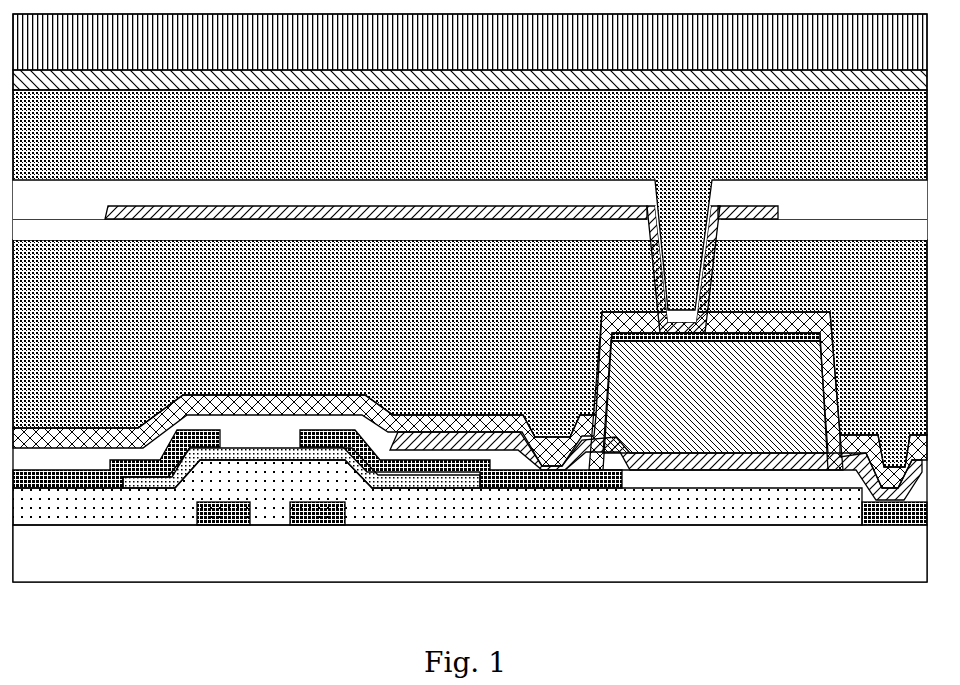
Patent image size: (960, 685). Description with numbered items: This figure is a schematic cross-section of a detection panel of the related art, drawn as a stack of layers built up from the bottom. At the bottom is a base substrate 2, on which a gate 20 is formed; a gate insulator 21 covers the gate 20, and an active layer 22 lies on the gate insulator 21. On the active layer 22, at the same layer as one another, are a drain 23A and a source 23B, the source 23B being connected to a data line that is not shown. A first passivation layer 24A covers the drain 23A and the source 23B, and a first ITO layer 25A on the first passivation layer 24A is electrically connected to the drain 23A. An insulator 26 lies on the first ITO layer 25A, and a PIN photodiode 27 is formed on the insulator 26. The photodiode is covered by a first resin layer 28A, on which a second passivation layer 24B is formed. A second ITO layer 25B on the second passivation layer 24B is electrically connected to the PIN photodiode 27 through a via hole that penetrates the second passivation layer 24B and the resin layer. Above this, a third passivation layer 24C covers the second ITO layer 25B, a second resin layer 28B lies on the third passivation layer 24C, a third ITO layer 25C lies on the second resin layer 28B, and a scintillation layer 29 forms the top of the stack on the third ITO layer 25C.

The base substrate 2 is at (470, 553).
The gate 20 is at (271, 513).
The gate insulator 21 is at (437, 492).
The active layer 22 is at (352, 462).
The drain 23A is at (461, 460).
The source 23B is at (116, 460).
The first passivation layer 24A is at (272, 432).
The second passivation layer 24B is at (470, 230).
The third passivation layer 24C is at (470, 199).
The first ITO layer 25A is at (656, 466).
The second ITO layer 25B is at (441, 269).
The third ITO layer 25C is at (470, 80).
The insulator 26 is at (470, 400).
The PIN photodiode 27 is at (715, 393).
The first resin layer 28A is at (470, 353).
The second resin layer 28B is at (470, 200).
The scintillation layer 29 is at (470, 42).